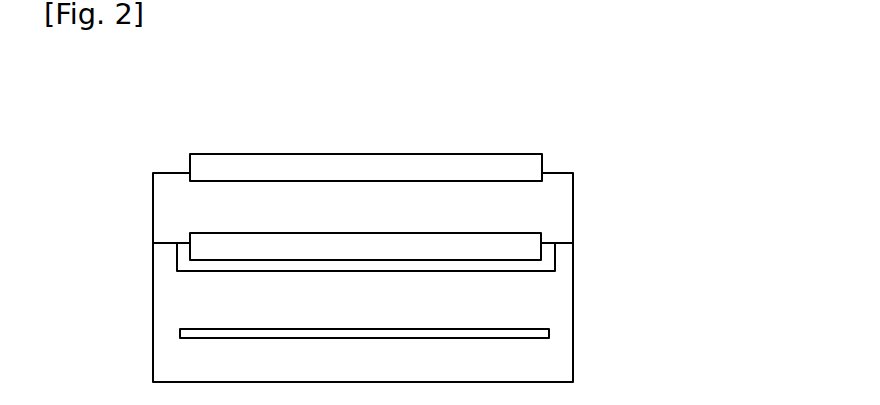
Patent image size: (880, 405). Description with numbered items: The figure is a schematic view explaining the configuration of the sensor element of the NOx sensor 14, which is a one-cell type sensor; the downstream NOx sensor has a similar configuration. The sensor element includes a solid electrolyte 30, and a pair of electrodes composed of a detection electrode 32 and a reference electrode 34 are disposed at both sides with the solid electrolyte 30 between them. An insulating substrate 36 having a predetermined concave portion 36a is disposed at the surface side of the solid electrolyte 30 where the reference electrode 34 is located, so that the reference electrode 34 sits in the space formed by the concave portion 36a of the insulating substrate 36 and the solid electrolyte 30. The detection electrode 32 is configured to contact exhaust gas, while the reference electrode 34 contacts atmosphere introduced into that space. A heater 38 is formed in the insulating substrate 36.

The NOx sensor 14 is at (428, 111).
The solid electrolyte 30 is at (164, 204).
The detection electrode 32 is at (205, 159).
The reference electrode 34 is at (202, 250).
The insulating substrate 36 is at (330, 285).
The concave portion 36a is at (332, 267).
The heater 38 is at (178, 331).